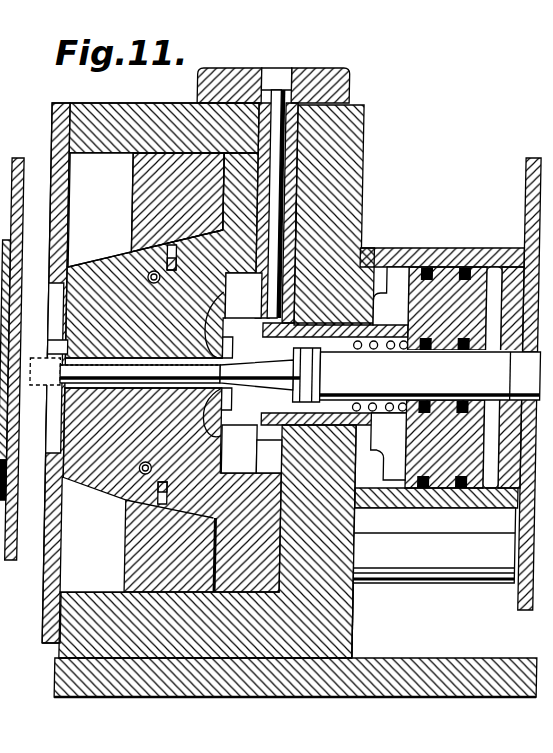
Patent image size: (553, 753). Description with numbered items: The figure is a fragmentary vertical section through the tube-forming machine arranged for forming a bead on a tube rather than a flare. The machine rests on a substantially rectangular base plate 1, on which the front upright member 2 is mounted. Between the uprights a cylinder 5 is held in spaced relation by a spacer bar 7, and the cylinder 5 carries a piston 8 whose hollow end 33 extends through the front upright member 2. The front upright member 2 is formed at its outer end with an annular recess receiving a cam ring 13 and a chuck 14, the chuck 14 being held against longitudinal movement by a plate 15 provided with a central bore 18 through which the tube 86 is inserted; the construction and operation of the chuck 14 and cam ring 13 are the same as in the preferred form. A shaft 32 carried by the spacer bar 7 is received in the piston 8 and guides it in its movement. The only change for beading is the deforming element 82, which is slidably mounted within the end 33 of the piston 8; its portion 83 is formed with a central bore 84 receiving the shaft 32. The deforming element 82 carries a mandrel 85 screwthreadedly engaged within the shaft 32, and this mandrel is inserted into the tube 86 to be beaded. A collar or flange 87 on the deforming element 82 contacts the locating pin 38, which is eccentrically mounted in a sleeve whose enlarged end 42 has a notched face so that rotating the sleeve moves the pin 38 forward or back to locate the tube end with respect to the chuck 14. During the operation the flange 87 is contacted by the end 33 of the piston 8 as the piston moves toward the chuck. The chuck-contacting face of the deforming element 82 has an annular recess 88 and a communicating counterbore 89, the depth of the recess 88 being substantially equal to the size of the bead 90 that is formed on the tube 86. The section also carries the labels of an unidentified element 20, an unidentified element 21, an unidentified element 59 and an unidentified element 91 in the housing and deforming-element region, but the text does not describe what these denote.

The base plate 1 is at (378, 668).
The front upright member 2 is at (359, 178).
The cylinder 5 is at (440, 258).
The spacer bar 7 is at (522, 170).
The piston 8 is at (483, 272).
The cam ring 13 is at (140, 182).
The chuck 14 is at (102, 262).
The plate 15 is at (47, 118).
The central bore 18 is at (58, 283).
The lower pocket 20 is at (116, 520).
The lower body portion 21 is at (118, 480).
The shaft 32 is at (300, 375).
The end of the piston 33 is at (398, 488).
The pin 38 is at (282, 137).
The enlarged end of the sleeve 42 is at (344, 90).
The sleeve 59 is at (293, 212).
The deforming element 82 is at (270, 440).
The portion of the deforming element 83 is at (368, 300).
The central bore 84 is at (350, 318).
The mandrel 85 is at (50, 346).
The tube 86 is at (38, 385).
The collar or flange 87 is at (250, 412).
The annular recess 88 is at (233, 315).
The counterbore 89 is at (248, 336).
The bead 90 is at (365, 376).
The lower bearing flange 91 is at (242, 430).